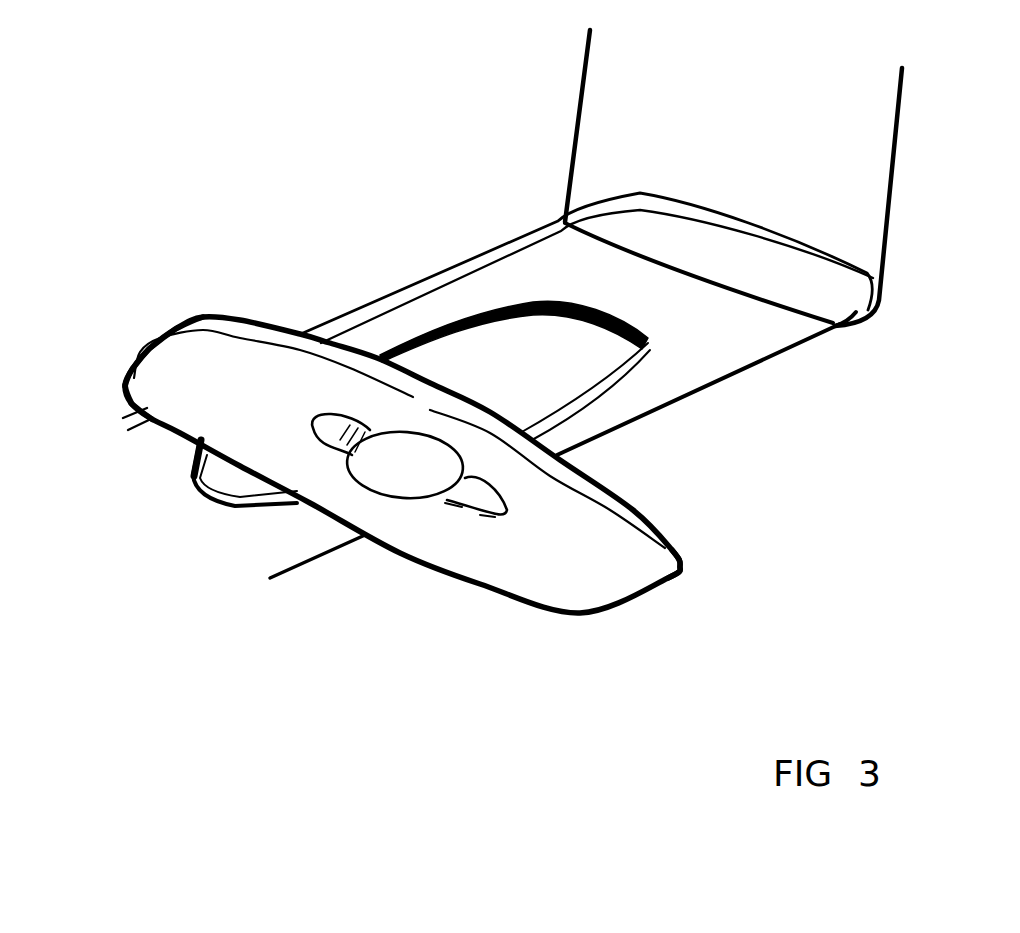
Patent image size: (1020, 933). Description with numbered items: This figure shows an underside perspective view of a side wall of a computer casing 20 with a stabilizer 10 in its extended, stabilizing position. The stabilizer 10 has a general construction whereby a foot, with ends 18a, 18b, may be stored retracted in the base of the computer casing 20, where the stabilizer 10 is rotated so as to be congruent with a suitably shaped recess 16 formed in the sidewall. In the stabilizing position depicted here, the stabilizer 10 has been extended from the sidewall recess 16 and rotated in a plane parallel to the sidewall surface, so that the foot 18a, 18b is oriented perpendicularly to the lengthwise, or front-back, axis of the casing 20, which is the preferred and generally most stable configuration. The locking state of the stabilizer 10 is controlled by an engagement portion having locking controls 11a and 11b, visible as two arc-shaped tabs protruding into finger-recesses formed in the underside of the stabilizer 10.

The stabilizer 10 is at (402, 498).
The locking control 11a is at (350, 437).
The locking control 11b is at (457, 497).
The recess 16 is at (578, 367).
The stabilizer foot 18a is at (187, 377).
The stabilizer foot 18b is at (610, 560).
The computer casing 20 is at (543, 158).